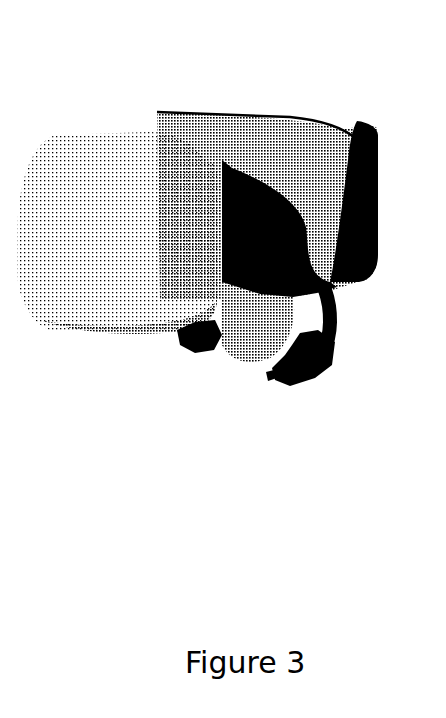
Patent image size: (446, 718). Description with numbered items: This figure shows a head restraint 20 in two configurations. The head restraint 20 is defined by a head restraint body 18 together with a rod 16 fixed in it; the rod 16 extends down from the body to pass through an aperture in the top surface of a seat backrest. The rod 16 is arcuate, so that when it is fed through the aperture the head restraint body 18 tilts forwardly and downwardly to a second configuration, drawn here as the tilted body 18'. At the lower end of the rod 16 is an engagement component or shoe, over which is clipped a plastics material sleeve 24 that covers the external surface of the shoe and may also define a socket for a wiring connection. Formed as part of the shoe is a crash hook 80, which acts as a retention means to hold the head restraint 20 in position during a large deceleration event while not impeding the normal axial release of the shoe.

The head restraint 20 is at (143, 102).
The head restraint body 18 is at (285, 204).
The head restraint body in second configuration 18' is at (117, 267).
The rod 16 is at (333, 312).
The plastics material sleeve 24 is at (323, 366).
The crash hook 80 is at (268, 384).